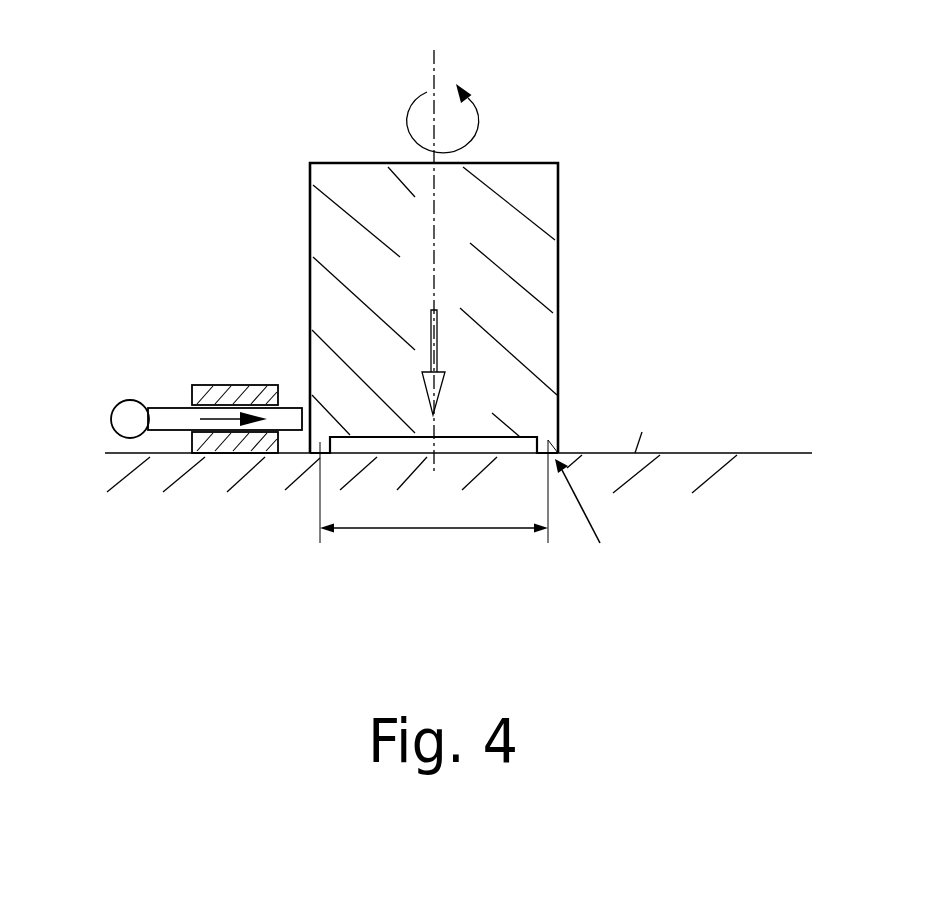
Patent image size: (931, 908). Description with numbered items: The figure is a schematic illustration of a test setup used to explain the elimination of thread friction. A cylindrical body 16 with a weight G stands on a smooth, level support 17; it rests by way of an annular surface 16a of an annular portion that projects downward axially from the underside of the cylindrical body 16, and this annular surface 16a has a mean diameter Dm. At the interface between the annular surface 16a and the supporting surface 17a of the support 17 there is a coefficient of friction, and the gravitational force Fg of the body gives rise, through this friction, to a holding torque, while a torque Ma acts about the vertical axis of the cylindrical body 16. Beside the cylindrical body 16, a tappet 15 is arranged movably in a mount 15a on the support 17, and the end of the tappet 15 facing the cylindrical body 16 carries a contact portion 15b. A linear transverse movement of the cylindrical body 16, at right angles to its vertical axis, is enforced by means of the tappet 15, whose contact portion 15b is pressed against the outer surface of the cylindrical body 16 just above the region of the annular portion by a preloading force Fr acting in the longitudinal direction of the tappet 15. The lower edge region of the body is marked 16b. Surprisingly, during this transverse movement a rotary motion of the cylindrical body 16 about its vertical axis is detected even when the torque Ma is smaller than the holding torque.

The tappet 15 is at (165, 417).
The mount 15a is at (222, 390).
The contact portion 15b is at (300, 418).
The cylindrical body 16 is at (530, 163).
The annular surface 16a is at (313, 453).
The bottom edge of body 16b is at (558, 452).
The support 17 is at (743, 482).
The supporting surface 17a is at (635, 453).
The torque Ma is at (402, 110).
The preloading force Fr is at (210, 422).
The gravitational force Fg is at (458, 362).
The weight G is at (431, 256).
The mean diameter Dm is at (427, 528).